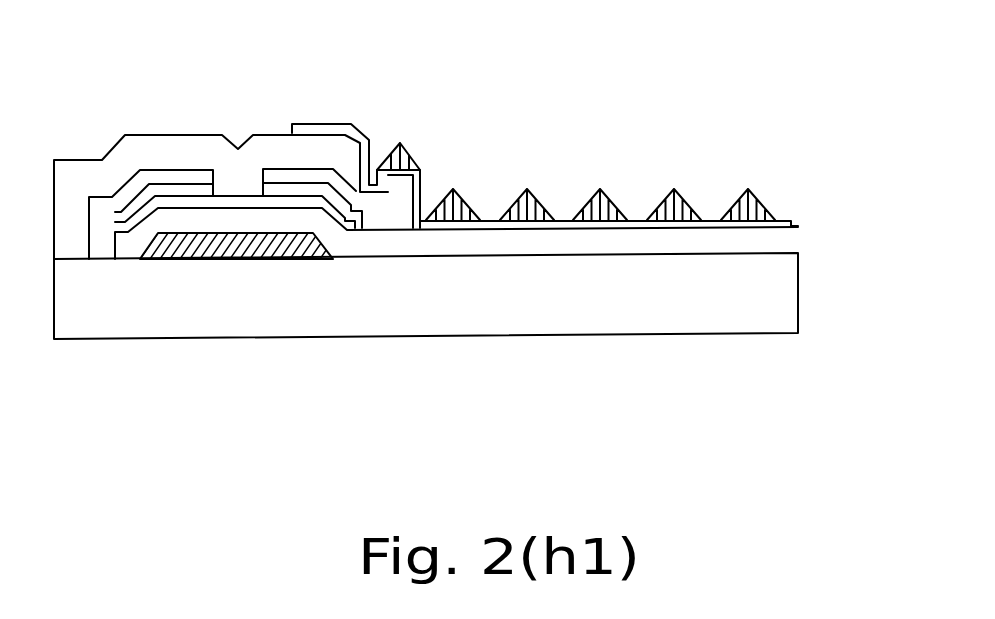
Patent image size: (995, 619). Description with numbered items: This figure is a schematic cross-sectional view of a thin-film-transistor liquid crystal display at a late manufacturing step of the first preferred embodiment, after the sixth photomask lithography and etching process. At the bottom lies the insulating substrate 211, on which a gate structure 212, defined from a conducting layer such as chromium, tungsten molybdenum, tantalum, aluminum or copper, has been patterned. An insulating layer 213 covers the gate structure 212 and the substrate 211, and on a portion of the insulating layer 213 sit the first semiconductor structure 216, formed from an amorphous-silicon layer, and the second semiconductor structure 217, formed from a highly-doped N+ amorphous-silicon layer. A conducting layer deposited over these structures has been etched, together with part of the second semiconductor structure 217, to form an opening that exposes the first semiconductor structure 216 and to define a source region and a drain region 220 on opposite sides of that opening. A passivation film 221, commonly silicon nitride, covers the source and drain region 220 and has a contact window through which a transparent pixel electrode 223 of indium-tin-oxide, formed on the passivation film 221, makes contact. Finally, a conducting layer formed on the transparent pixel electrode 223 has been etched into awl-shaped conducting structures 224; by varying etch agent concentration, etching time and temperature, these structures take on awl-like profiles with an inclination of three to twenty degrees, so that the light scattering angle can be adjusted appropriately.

The insulating substrate 211 is at (747, 308).
The gate structure 212 is at (254, 258).
The insulating layer 213 is at (768, 237).
The first semiconductor structure 216 is at (315, 202).
The second semiconductor structure 217 is at (283, 190).
The source region and drain region 220 is at (103, 218).
The passivation film 221 is at (202, 150).
The transparent pixel electrode 223 is at (792, 222).
The awl-shaped conducting structures 224 is at (758, 206).